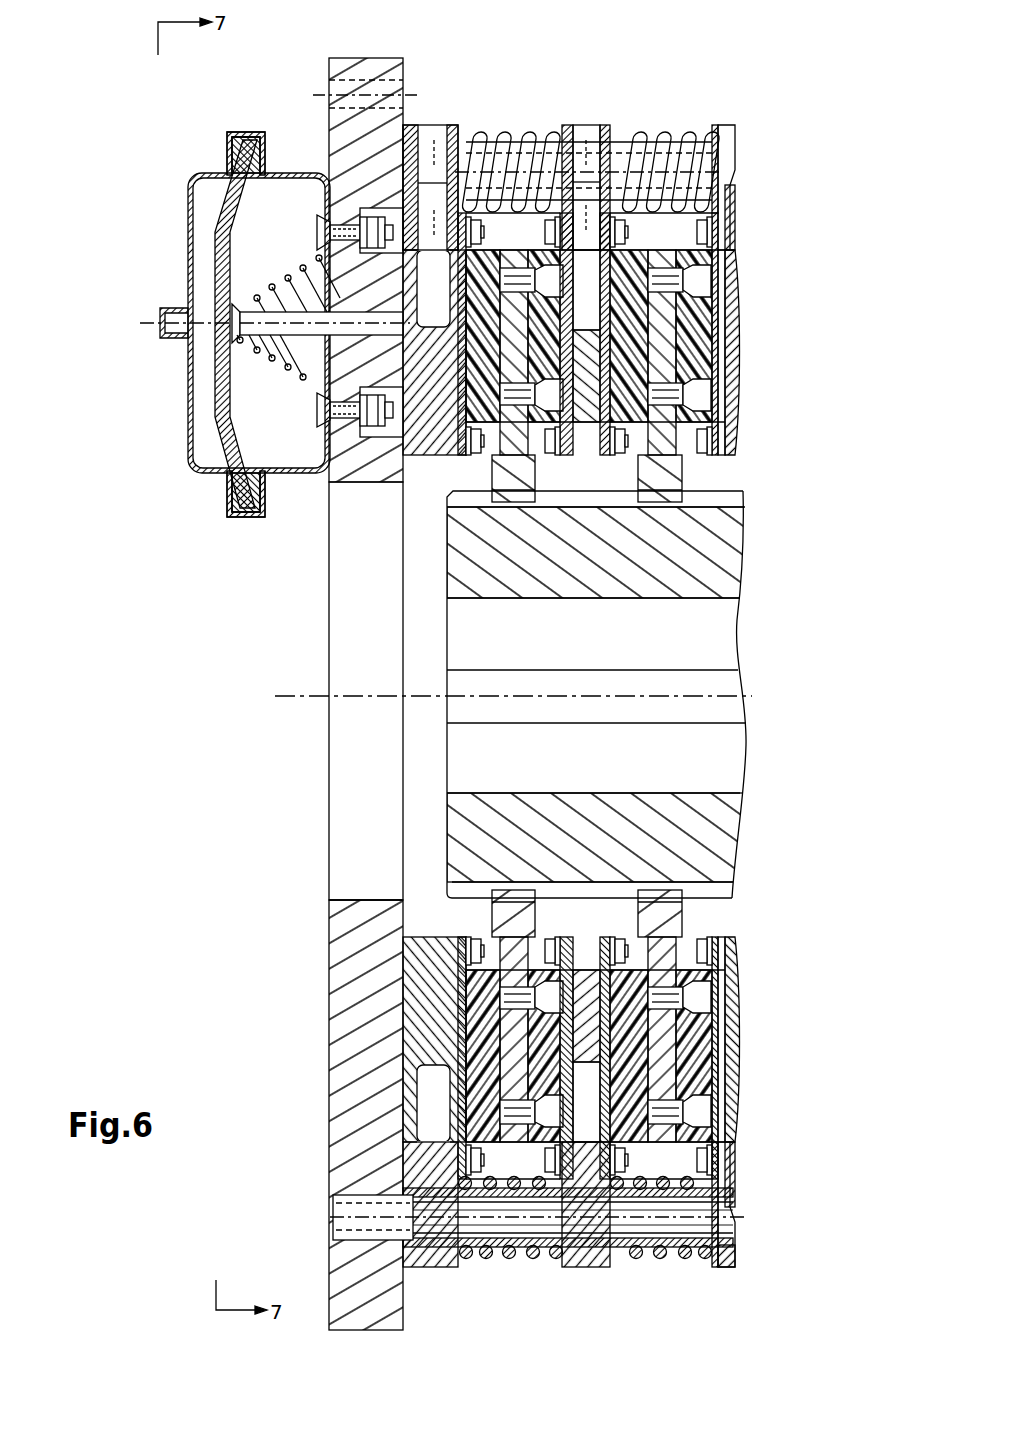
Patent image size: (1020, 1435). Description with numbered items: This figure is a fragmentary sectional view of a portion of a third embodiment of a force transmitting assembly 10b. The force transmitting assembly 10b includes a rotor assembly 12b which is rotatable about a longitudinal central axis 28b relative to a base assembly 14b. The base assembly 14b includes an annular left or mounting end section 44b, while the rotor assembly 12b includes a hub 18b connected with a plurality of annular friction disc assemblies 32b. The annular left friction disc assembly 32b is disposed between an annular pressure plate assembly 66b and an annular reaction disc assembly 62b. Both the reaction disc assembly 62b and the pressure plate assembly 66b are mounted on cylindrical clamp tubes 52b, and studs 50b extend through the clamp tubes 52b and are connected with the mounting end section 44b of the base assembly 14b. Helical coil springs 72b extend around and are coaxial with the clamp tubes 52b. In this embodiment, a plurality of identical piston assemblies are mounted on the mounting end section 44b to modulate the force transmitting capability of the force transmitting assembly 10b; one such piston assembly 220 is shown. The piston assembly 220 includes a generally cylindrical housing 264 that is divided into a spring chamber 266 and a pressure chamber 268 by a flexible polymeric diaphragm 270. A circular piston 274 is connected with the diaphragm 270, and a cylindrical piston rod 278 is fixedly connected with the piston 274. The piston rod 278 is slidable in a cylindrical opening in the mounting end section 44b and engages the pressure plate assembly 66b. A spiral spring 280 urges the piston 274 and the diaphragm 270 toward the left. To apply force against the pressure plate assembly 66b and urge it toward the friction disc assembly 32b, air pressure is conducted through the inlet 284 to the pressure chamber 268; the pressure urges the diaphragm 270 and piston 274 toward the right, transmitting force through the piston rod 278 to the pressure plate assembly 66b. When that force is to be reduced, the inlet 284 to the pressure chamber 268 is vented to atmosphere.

The force transmitting assembly 10b is at (663, 43).
The rotor assembly 12b is at (754, 548).
The base assembly 14b is at (318, 1112).
The hub 18b is at (718, 836).
The longitudinal central axis 28b is at (729, 681).
The friction disc assembly 32b is at (521, 1160).
The mounting end section 44b is at (398, 55).
The stud 50b is at (725, 1208).
The clamp tube 52b is at (667, 155).
The reaction disc assembly 62b is at (586, 108).
The pressure plate assembly 66b is at (445, 110).
The helical coil spring 72b is at (497, 132).
The piston assembly 220 is at (255, 356).
The housing 264 is at (175, 472).
The spring chamber 266 is at (288, 447).
The pressure chamber 268 is at (202, 382).
The diaphragm 270 is at (215, 264).
The piston 274 is at (233, 250).
The piston rod 278 is at (300, 330).
The spiral spring 280 is at (240, 288).
The inlet 284 is at (170, 338).